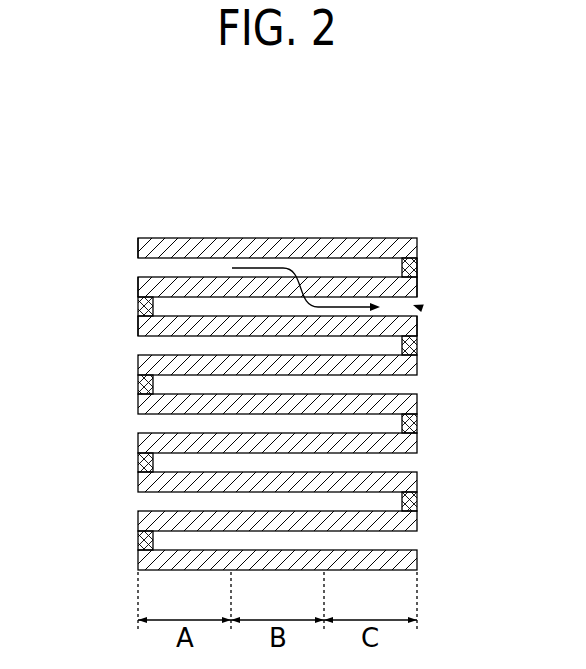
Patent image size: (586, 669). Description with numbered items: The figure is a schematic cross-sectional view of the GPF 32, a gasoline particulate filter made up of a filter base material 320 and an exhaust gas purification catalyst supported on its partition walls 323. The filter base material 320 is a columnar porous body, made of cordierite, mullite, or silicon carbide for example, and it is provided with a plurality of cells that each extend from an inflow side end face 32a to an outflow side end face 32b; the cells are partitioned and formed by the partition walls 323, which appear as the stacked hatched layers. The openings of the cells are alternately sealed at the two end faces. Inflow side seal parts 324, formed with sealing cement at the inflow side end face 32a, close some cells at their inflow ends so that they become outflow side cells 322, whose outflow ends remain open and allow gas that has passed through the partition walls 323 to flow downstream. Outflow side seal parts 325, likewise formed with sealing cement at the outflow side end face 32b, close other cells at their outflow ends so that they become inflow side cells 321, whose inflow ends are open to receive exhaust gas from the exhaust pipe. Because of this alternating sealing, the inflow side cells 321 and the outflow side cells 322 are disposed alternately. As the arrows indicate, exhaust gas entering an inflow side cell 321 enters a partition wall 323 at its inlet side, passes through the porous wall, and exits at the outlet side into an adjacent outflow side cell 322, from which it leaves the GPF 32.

The GPF 32 is at (271, 147).
The filter base material 320 is at (304, 196).
The partition walls 323 is at (345, 237).
The inflow side cells 321 is at (130, 266).
The outflow side cells 322 is at (423, 308).
The inflow side seal parts 324 is at (138, 306).
The outflow side seal parts 325 is at (418, 265).
The inflow side end face 32a is at (124, 334).
The outflow side end face 32b is at (430, 276).